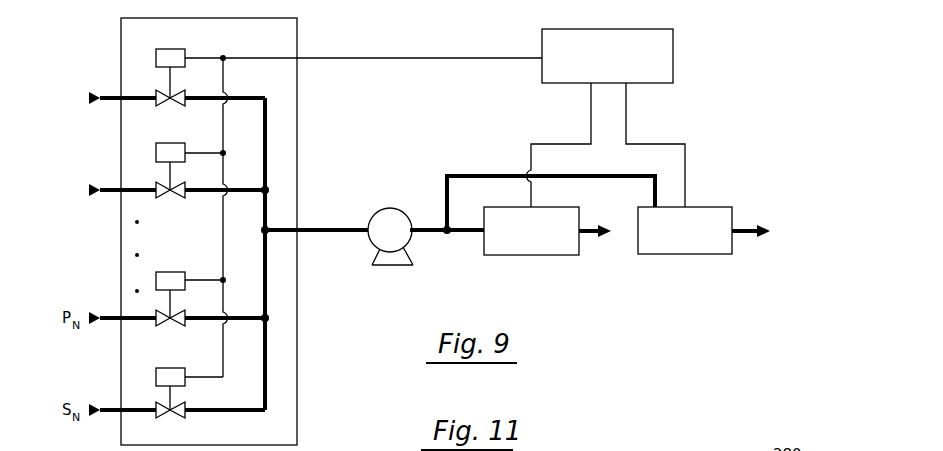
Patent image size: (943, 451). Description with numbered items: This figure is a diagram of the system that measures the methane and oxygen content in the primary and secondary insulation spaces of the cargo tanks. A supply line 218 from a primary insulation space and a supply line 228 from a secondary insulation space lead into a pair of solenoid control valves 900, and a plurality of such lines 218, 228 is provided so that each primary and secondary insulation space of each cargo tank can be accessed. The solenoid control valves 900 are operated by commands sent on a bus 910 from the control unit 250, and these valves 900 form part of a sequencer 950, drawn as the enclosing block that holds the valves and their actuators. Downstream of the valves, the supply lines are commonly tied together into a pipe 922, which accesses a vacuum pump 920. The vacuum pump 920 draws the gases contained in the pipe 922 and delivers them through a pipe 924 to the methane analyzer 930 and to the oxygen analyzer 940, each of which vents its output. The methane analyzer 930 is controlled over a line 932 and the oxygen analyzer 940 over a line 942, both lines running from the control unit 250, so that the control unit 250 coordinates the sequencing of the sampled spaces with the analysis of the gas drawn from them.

The supply line 218 is at (109, 91).
The supply line 228 is at (109, 185).
The control unit 250 is at (673, 62).
The solenoid control valves 900 is at (178, 106).
The bus 910 is at (323, 59).
The vacuum pump 920 is at (372, 265).
The pipe 922 is at (305, 221).
The pipe 924 is at (446, 236).
The methane analyzer 930 is at (528, 256).
The line 932 is at (549, 144).
The oxygen analyzer 940 is at (675, 255).
The line 942 is at (626, 125).
The sequencer 950 is at (297, 385).